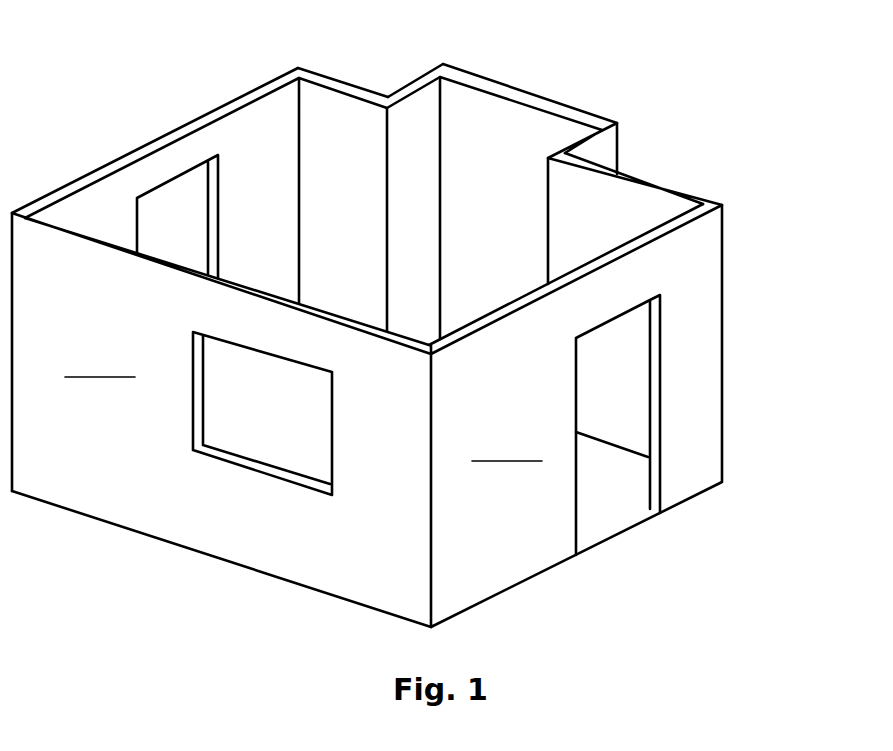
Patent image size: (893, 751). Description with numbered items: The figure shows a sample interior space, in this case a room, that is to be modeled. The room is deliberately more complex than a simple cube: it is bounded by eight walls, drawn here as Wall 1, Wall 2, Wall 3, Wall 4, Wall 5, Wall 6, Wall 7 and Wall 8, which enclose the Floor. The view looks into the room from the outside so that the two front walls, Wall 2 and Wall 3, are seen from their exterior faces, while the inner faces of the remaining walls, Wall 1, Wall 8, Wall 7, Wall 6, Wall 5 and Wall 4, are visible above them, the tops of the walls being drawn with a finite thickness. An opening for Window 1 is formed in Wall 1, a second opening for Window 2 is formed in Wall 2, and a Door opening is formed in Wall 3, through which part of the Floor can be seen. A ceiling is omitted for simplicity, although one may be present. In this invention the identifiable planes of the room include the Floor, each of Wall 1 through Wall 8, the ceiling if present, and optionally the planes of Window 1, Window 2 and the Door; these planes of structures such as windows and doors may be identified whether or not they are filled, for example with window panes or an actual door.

The wall Wall 1 is at (128, 168).
The wall Wall 2 is at (221, 420).
The wall Wall 3 is at (575, 415).
The wall Wall 4 is at (639, 205).
The wall Wall 5 is at (612, 145).
The wall Wall 6 is at (519, 177).
The wall Wall 7 is at (410, 158).
The wall Wall 8 is at (333, 170).
The window Window 1 is at (178, 193).
The window Window 2 is at (257, 441).
The door Door is at (666, 396).
The floor Floor is at (600, 488).